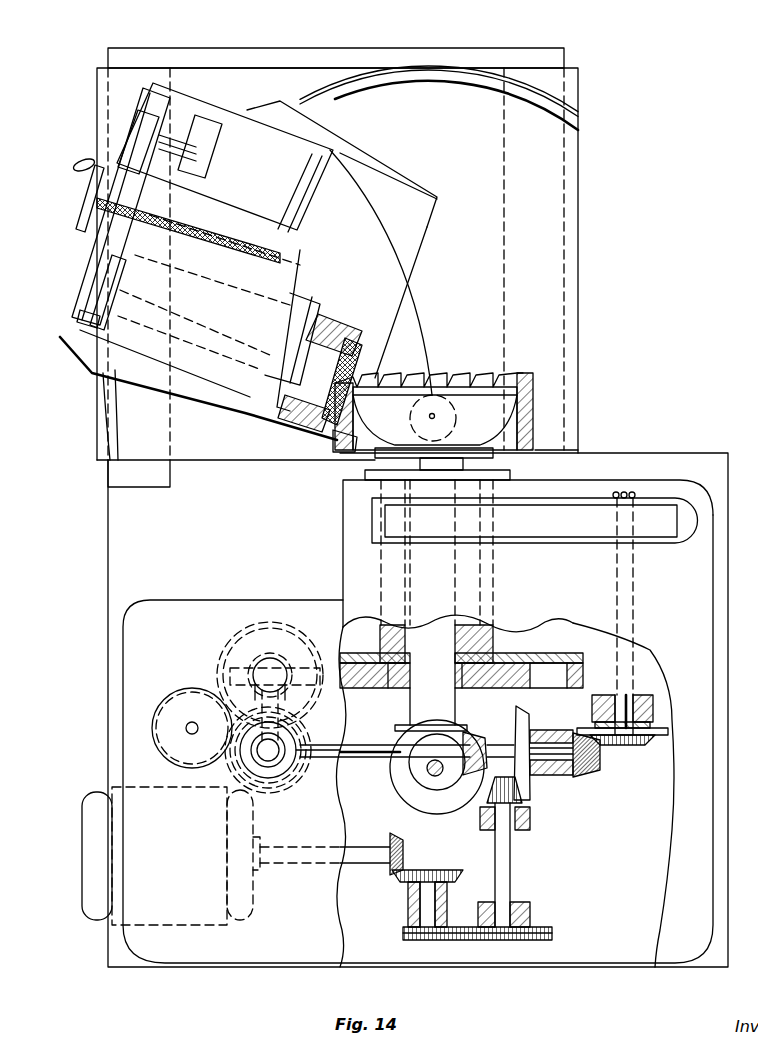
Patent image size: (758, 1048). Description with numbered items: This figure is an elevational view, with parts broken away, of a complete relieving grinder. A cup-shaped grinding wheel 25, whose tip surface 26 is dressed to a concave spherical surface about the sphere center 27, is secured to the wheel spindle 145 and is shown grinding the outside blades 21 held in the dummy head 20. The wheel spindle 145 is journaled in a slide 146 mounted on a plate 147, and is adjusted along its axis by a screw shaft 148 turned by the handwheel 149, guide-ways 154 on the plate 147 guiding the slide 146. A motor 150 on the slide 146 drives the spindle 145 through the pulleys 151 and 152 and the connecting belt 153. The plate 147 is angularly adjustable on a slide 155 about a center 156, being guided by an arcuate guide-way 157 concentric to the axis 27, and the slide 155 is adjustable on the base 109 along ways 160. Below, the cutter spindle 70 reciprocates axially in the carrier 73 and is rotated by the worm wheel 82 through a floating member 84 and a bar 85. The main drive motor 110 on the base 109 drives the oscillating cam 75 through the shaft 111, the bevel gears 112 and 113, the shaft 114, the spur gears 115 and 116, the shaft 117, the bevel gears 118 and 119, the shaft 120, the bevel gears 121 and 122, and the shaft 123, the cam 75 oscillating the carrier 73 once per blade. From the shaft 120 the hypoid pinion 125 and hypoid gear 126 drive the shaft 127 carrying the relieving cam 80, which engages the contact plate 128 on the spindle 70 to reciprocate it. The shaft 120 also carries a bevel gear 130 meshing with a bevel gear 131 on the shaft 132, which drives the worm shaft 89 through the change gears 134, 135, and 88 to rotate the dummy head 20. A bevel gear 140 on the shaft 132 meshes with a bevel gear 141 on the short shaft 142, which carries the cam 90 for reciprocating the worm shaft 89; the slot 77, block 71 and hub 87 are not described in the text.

The dummy head 20 is at (350, 460).
The outside blades 21 is at (500, 378).
The grinding wheel 25 is at (337, 318).
The tip surface 26 is at (355, 352).
The sphere center 27 is at (435, 404).
The cutter spindle 70 is at (420, 695).
The bearing block 71 is at (480, 640).
The carrier 73 is at (381, 640).
The oscillating cam 75 is at (660, 522).
The guide slot 77 is at (566, 530).
The relieving cam 80 is at (432, 785).
The worm wheel 82 is at (583, 673).
The floating member 84 is at (527, 660).
The bar 85 is at (465, 684).
The hub 87 is at (270, 668).
The change gear 88 is at (245, 640).
The worm shaft 89 is at (280, 668).
The cam 90 is at (232, 675).
The base 109 is at (108, 555).
The main drive motor 110 is at (85, 895).
The shaft 111 is at (362, 860).
The bevel gear 112 is at (403, 845).
The bevel gear 113 is at (455, 876).
The shaft 114 is at (410, 906).
The spur gear 115 is at (405, 936).
The spur gear 116 is at (552, 934).
The shaft 117 is at (512, 872).
The bevel gear 118 is at (480, 803).
The bevel gear 119 is at (525, 730).
The shaft 120 is at (560, 762).
The bevel gear 121 is at (592, 766).
The bevel gear 122 is at (640, 745).
The shaft 123 is at (622, 673).
The hypoid pinion 125 is at (480, 745).
The hypoid gear 126 is at (395, 760).
The shaft 127 is at (427, 771).
The contact plate 128 is at (396, 729).
The bevel gear 130 is at (278, 770).
The bevel gear 131 is at (243, 764).
The shaft 132 is at (270, 792).
The change gear 134 is at (292, 766).
The change gear 135 is at (174, 748).
The bevel gear 140 is at (267, 785).
The bevel gear 141 is at (288, 695).
The short shaft 142 is at (253, 698).
The wheel spindle 145 is at (215, 325).
The slide 146 is at (290, 254).
The plate 147 is at (405, 258).
The screw shaft 148 is at (268, 195).
The handwheel 149 is at (88, 213).
The motor 150 is at (296, 210).
The pulley 151 is at (143, 137).
The pulley 152 is at (100, 288).
The belt 153 is at (110, 243).
The guide-ways 154 is at (370, 192).
The slide 155 is at (578, 325).
The center 156 is at (412, 414).
The arcuate guide-way 157 is at (455, 98).
The ways 160 is at (148, 52).